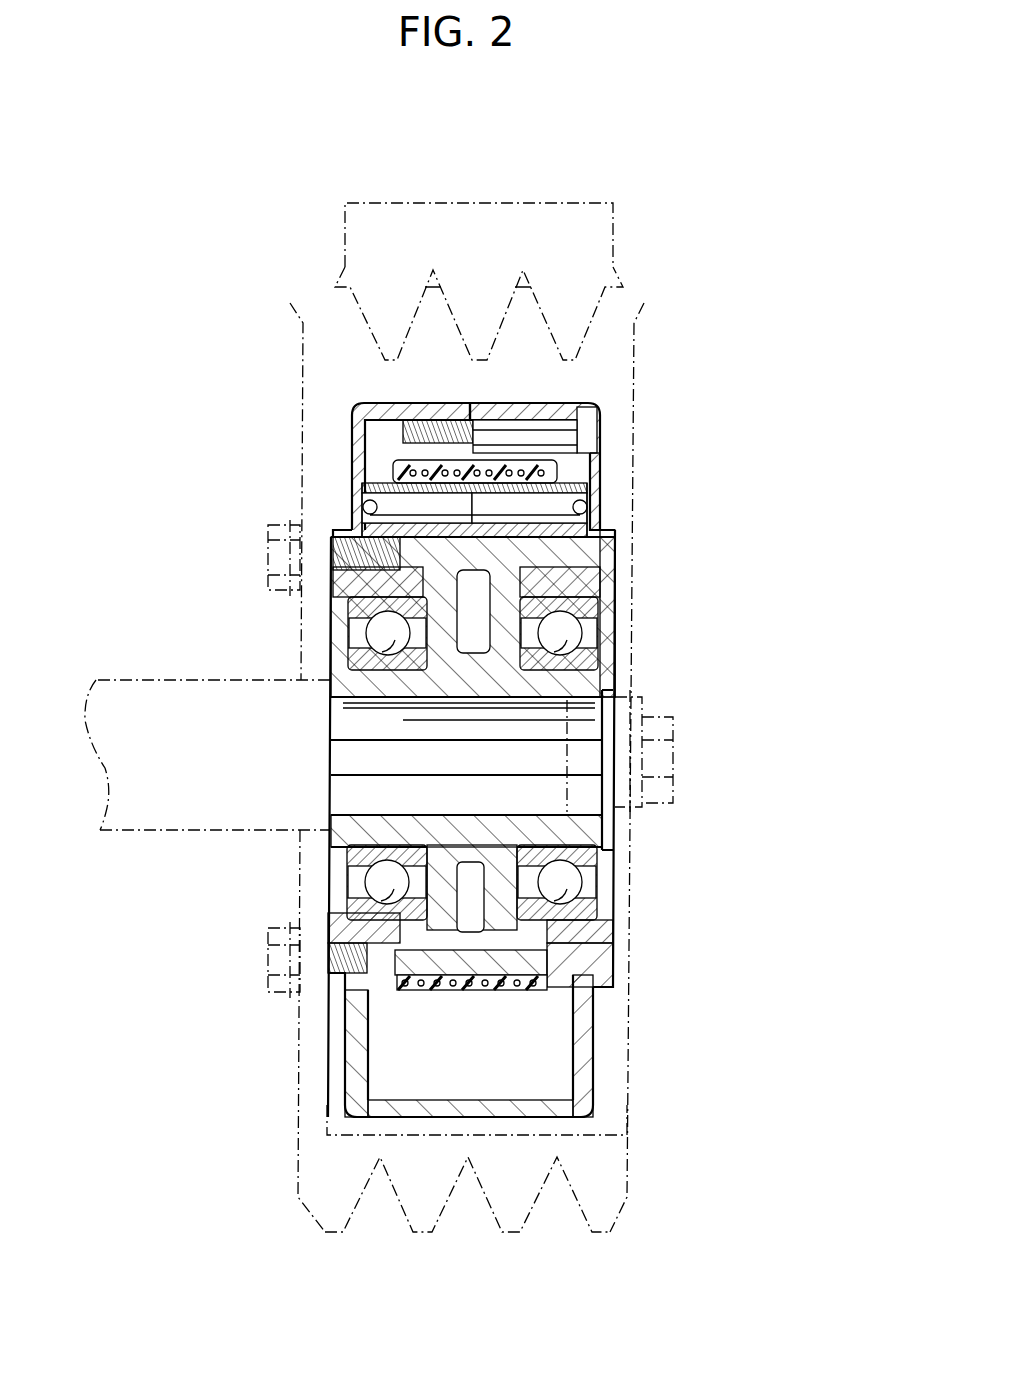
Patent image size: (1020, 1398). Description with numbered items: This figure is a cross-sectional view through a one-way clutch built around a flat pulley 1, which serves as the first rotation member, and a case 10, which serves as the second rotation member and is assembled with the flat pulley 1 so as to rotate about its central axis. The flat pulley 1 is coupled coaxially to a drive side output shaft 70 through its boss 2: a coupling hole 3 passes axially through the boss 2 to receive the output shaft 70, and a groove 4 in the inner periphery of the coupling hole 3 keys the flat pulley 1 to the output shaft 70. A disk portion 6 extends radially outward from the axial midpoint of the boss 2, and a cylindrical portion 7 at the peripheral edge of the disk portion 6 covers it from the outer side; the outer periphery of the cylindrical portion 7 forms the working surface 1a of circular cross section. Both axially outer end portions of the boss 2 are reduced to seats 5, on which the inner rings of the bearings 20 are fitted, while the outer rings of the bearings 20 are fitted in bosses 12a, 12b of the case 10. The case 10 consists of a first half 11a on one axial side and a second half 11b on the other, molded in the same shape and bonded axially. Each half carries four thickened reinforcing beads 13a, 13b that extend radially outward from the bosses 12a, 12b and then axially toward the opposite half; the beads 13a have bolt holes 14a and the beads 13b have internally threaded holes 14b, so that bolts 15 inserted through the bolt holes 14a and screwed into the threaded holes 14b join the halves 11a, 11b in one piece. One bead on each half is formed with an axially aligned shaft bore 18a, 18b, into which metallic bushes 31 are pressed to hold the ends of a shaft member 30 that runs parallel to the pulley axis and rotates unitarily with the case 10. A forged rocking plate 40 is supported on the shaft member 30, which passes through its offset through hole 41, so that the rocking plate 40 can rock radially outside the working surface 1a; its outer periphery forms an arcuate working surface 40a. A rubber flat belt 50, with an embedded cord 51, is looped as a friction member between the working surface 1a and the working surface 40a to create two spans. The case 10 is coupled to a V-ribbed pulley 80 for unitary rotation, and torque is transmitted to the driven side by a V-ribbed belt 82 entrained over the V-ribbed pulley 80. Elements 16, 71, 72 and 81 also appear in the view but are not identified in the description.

The flat pulley 1 is at (612, 678).
The working surface 1a is at (523, 990).
The boss 2 is at (598, 937).
The coupling hole 3 is at (527, 815).
The groove 4 is at (392, 775).
The seats 5 is at (350, 652).
The disk portion 6 is at (560, 935).
The cylindrical portion 7 is at (560, 968).
The case 10 is at (622, 558).
The first half 11a is at (600, 468).
The second half 11b is at (352, 442).
The boss 12a is at (565, 570).
The boss 12b is at (392, 572).
The reinforcing beads 13a is at (603, 537).
The reinforcing beads 13b is at (352, 486).
The bolt hole 14a is at (600, 417).
The internally threaded hole 14b is at (400, 410).
The bolts 15 is at (600, 437).
The knurled portion 16 is at (345, 552).
The shaft bore 18a is at (600, 515).
The shaft bore 18b is at (362, 508).
The bearings 20 is at (347, 885).
The shaft member 30 is at (445, 440).
The bushes 31 is at (395, 458).
The rocking plate 40 is at (517, 473).
The working surface 40a is at (546, 476).
The through hole 41 is at (493, 473).
The flat belt 50 is at (407, 1000).
The cord 51 is at (470, 992).
The drive side output shaft 70 is at (135, 680).
The bolt 71 is at (632, 700).
The nut 72 is at (673, 765).
The V-ribbed pulley 80 is at (335, 287).
The bolt 81 is at (268, 558).
The V-ribbed belt 82 is at (345, 207).